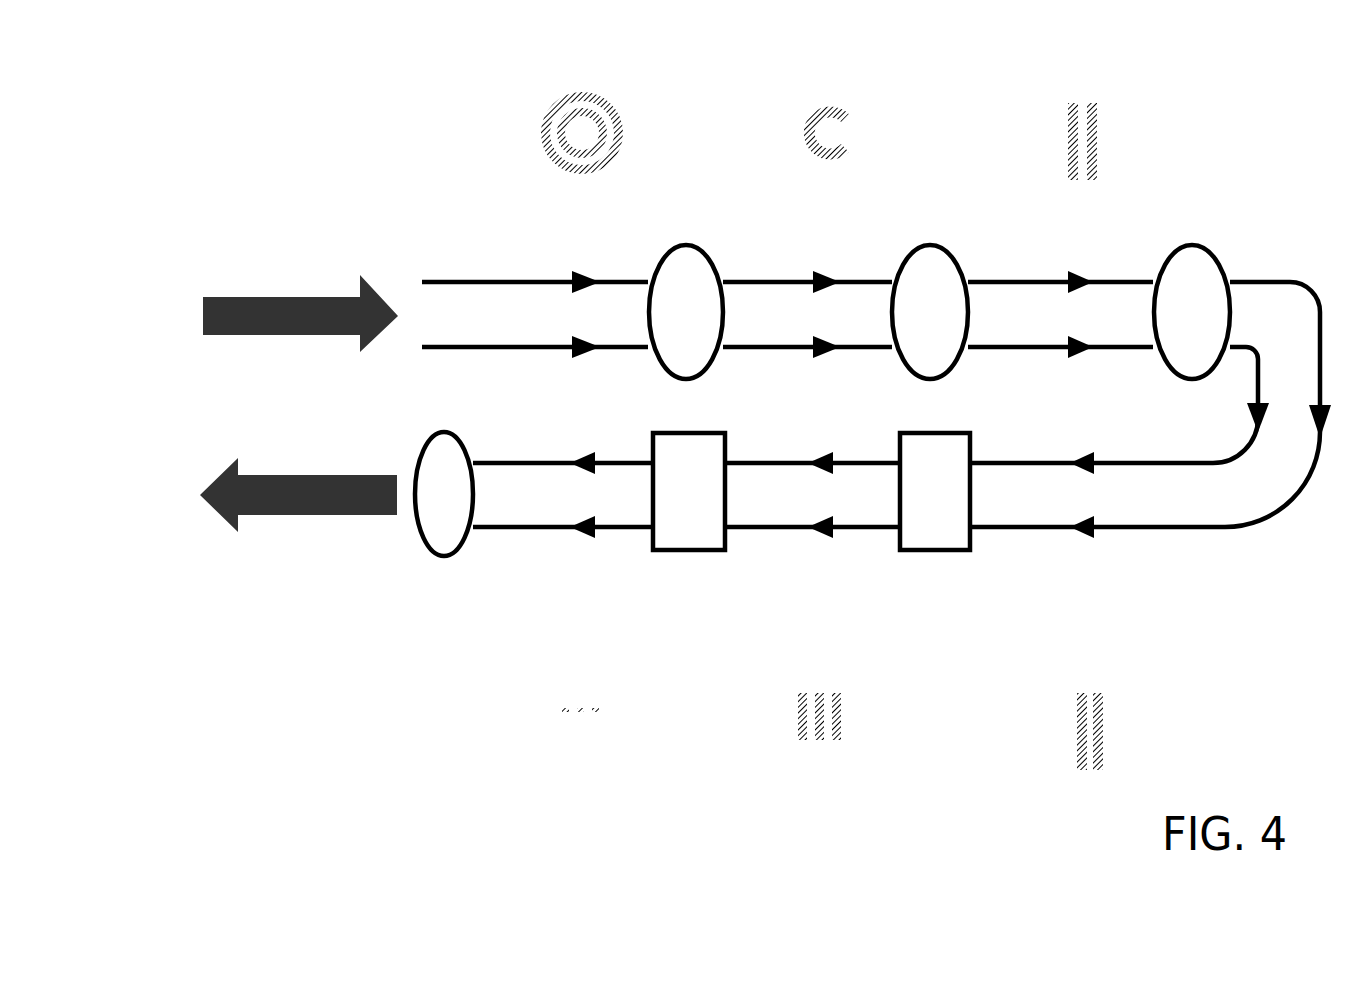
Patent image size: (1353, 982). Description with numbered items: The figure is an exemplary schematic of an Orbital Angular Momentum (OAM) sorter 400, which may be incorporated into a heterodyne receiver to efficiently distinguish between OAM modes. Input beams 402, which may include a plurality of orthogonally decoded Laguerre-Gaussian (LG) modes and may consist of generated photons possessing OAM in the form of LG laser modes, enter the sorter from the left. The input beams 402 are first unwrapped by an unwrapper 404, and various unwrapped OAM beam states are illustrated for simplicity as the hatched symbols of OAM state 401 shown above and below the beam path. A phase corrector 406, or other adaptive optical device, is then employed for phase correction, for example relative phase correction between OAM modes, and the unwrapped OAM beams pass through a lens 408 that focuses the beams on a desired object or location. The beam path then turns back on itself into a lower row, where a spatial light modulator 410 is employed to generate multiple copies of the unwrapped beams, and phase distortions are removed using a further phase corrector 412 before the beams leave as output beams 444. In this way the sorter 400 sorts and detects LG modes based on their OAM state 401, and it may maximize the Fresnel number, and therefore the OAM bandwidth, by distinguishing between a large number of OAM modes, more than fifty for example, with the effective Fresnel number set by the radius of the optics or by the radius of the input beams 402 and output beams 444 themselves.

The Orbital Angular Momentum (OAM) sorter 400 is at (1280, 77).
The OAM beam states 401 is at (1038, 119).
The input beams 402 is at (328, 284).
The unwrapper 404 is at (664, 325).
The phase corrector 406 is at (908, 325).
The lens 408 is at (1170, 325).
The spatial light modulator 410 is at (913, 498).
The phase corrector 412 is at (667, 498).
The output beams 444 is at (293, 526).